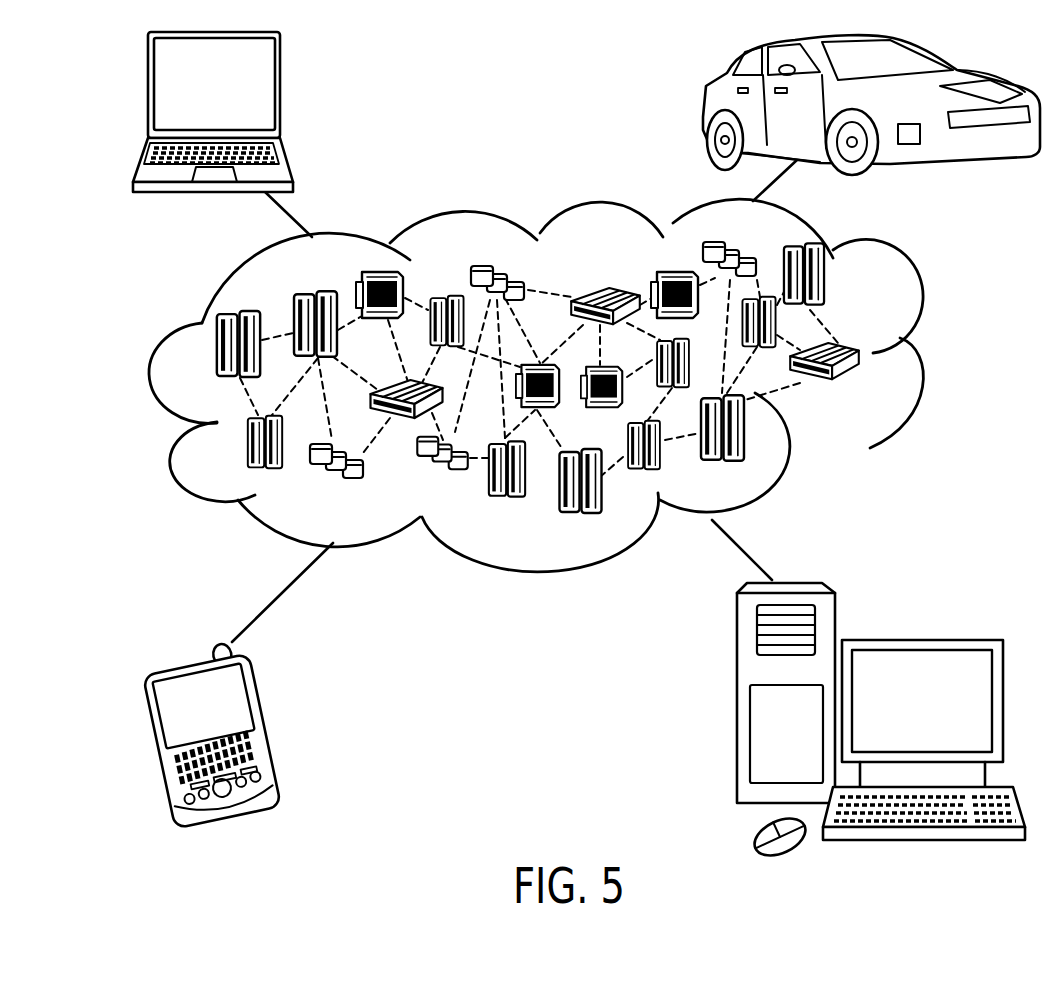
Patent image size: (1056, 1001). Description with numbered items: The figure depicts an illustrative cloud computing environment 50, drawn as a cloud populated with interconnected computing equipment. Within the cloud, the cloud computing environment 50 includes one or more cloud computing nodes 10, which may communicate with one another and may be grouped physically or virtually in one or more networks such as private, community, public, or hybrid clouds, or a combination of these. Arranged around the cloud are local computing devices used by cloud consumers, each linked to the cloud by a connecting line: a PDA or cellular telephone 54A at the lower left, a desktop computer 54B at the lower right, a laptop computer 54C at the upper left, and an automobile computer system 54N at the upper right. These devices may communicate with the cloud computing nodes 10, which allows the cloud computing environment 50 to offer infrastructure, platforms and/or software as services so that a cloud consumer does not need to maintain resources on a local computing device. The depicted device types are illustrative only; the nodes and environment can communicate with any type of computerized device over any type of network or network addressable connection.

The cloud computing environment 50 is at (566, 385).
The cloud computing node 10 is at (872, 391).
The PDA or cellular telephone 54A is at (270, 731).
The desktop computer 54B is at (920, 639).
The laptop computer 54C is at (282, 92).
The automobile computer system 54N is at (703, 106).